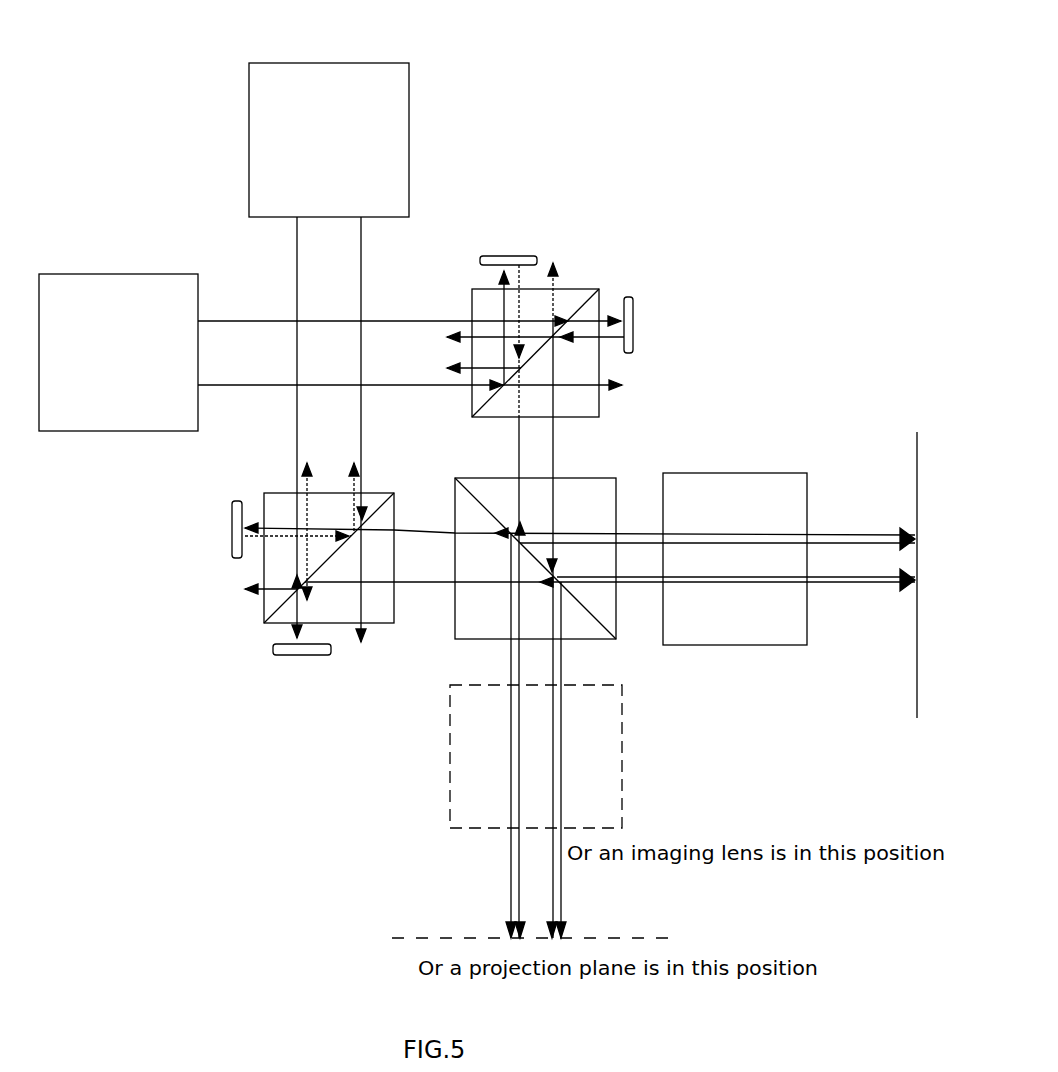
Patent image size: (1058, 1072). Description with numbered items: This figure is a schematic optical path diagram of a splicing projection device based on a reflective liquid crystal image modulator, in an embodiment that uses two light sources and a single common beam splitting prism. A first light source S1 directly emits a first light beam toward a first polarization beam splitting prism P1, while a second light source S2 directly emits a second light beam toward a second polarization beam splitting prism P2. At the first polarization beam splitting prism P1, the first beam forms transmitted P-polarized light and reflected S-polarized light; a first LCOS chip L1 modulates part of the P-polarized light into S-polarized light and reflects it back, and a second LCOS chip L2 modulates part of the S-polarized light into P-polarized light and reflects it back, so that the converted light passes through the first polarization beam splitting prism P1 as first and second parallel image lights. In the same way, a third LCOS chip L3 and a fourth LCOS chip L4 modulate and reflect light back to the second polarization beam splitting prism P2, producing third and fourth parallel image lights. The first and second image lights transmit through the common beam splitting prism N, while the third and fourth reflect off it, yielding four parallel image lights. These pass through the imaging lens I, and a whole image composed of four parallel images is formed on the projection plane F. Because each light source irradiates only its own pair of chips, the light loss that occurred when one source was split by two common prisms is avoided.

The first light source S1 is at (82, 274).
The second light source S2 is at (257, 63).
The first LCOS chip L1 is at (509, 257).
The second LCOS chip L2 is at (633, 300).
The third LCOS chip L3 is at (276, 646).
The fourth LCOS chip L4 is at (233, 503).
The first polarization beam splitting prism P1 is at (583, 290).
The second polarization beam splitting prism P2 is at (376, 498).
The common beam splitting prism N is at (603, 478).
The imaging lens I is at (790, 473).
The projection plane F is at (917, 687).